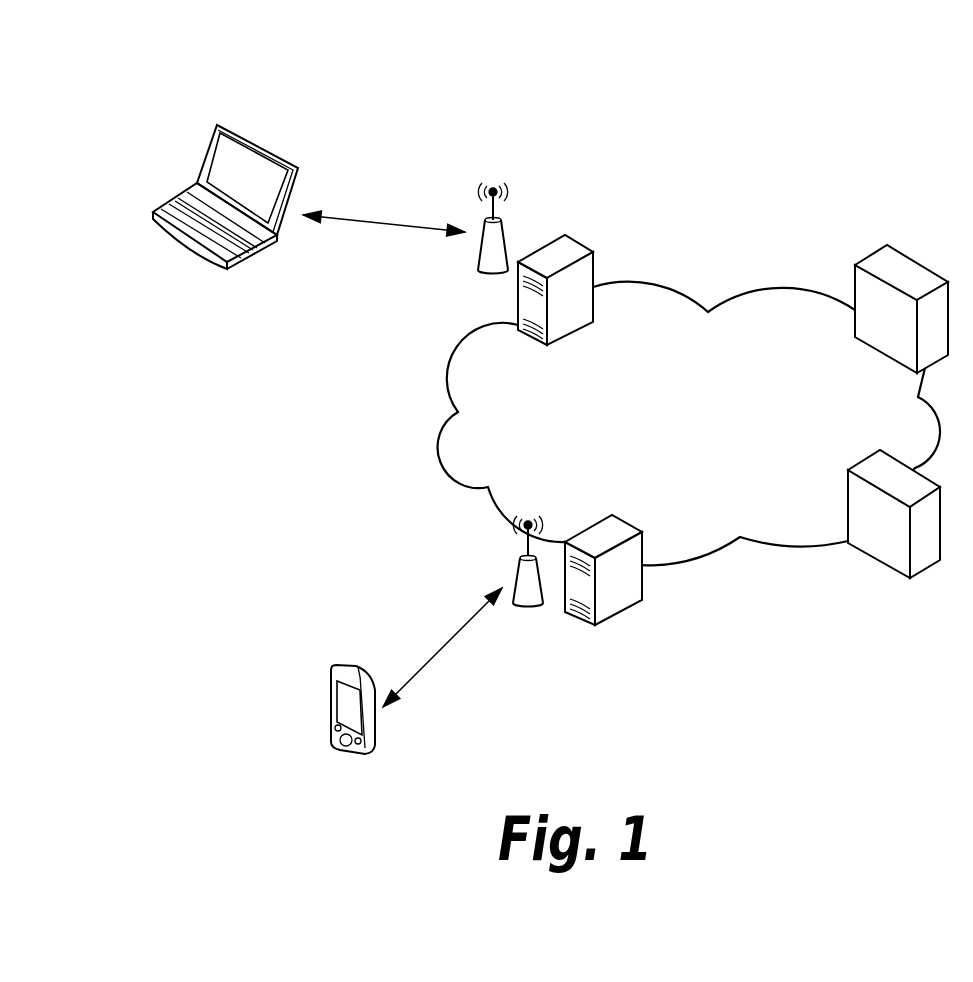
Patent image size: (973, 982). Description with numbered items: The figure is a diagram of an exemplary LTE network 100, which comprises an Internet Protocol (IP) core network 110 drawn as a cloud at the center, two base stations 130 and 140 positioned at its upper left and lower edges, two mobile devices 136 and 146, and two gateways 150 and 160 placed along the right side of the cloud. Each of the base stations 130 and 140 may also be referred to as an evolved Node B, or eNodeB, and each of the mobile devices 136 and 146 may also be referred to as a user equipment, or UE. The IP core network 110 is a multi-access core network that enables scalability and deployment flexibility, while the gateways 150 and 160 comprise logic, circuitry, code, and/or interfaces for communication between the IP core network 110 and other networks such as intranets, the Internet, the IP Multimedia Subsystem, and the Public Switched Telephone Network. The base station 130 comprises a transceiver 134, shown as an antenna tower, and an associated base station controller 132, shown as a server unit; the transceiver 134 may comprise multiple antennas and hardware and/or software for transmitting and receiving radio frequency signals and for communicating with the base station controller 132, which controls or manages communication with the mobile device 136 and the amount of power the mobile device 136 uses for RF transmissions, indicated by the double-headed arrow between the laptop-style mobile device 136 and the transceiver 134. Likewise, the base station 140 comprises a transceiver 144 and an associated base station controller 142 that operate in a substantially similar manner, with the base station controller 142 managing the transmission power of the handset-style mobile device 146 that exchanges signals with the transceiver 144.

The LTE network 100 is at (860, 112).
The Internet Protocol (IP) core network 110 is at (750, 292).
The base station 130 is at (531, 246).
The base station controller 132 is at (580, 330).
The transceiver 134 is at (480, 267).
The mobile device 136 is at (200, 258).
The base station 140 is at (582, 630).
The base station controller 142 is at (643, 593).
The transceiver 144 is at (518, 572).
The mobile device 146 is at (330, 697).
The gateway 150 is at (903, 328).
The gateway 160 is at (897, 528).